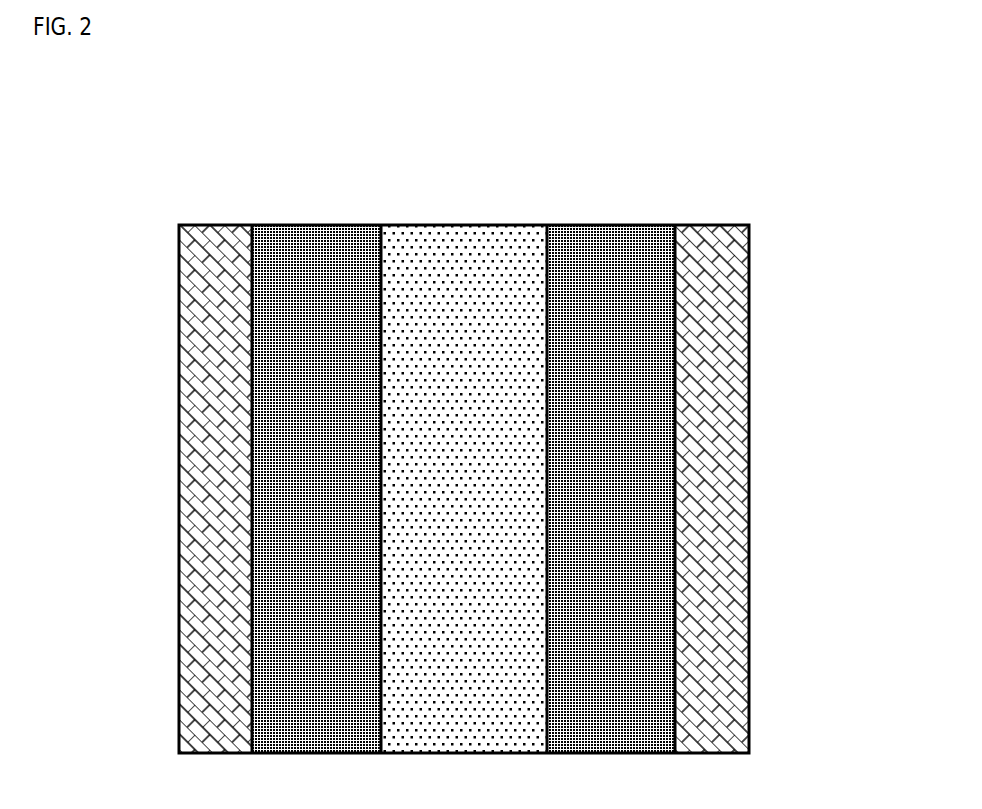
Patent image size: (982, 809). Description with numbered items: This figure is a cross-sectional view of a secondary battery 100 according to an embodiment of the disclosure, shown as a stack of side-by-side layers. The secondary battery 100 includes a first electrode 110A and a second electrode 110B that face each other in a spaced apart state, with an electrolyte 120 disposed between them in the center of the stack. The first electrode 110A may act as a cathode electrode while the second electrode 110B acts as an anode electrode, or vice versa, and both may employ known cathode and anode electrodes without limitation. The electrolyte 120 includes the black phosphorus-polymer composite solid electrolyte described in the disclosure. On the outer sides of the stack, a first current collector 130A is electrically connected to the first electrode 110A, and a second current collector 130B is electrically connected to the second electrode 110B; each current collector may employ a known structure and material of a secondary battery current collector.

The secondary battery 100 is at (477, 106).
The first electrode 110A is at (307, 225).
The second electrode 110B is at (606, 225).
The electrolyte 120 is at (447, 225).
The first current collector 130A is at (178, 553).
The second current collector 130B is at (750, 533).